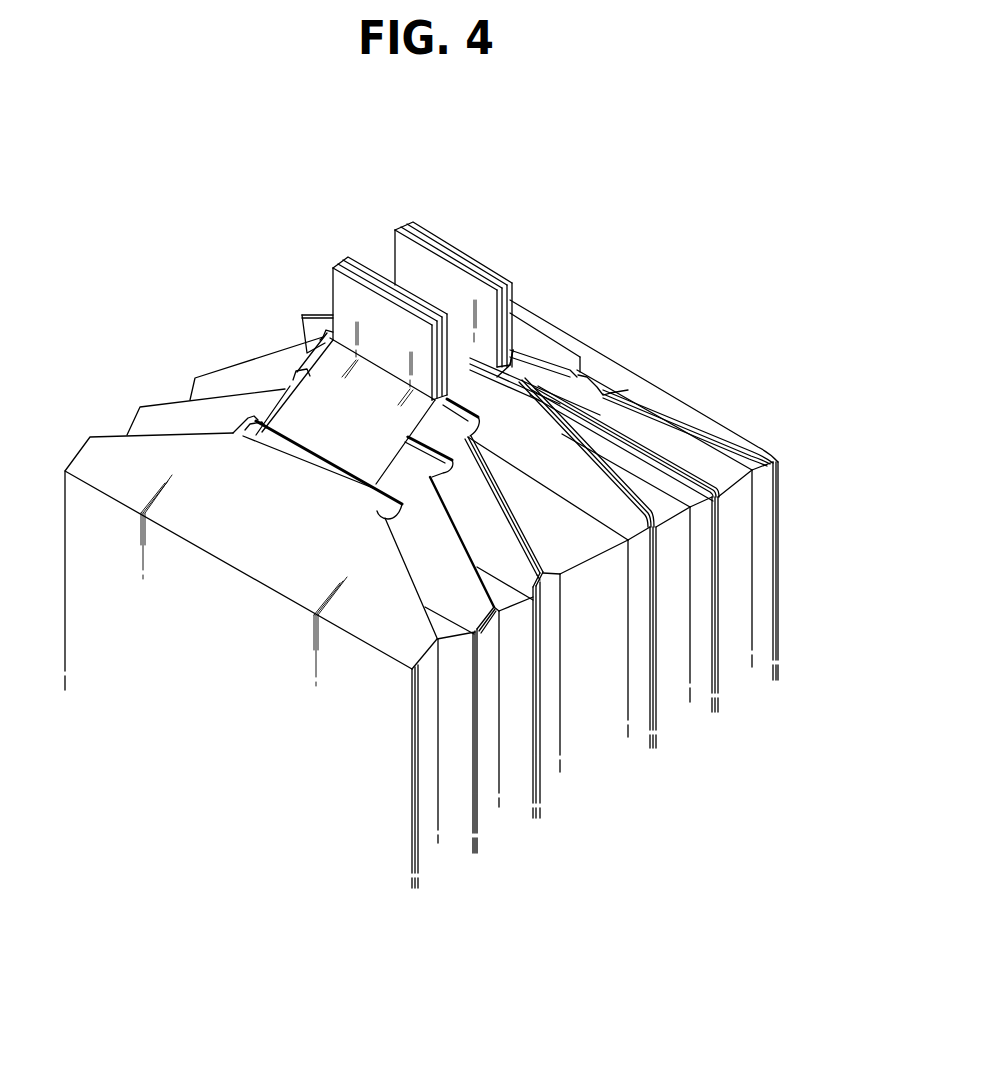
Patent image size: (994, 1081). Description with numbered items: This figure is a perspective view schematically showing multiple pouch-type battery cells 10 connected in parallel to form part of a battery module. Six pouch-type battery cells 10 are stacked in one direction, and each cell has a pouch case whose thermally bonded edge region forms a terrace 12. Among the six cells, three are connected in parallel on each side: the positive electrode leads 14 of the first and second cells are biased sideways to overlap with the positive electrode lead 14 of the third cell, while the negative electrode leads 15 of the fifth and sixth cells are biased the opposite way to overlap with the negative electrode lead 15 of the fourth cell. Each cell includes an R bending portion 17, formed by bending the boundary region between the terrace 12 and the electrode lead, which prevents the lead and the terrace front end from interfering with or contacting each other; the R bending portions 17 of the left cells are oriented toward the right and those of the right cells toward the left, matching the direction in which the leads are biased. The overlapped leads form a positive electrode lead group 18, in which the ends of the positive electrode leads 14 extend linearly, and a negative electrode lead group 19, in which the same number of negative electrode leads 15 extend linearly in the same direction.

The pouch-type battery cell 10 is at (422, 837).
The terrace 12 is at (173, 450).
The positive electrode lead 14 is at (327, 377).
The negative electrode lead 15 is at (523, 352).
The R bending portion 17 is at (258, 433).
The positive electrode lead group 18 is at (347, 254).
The negative electrode lead group 19 is at (411, 218).